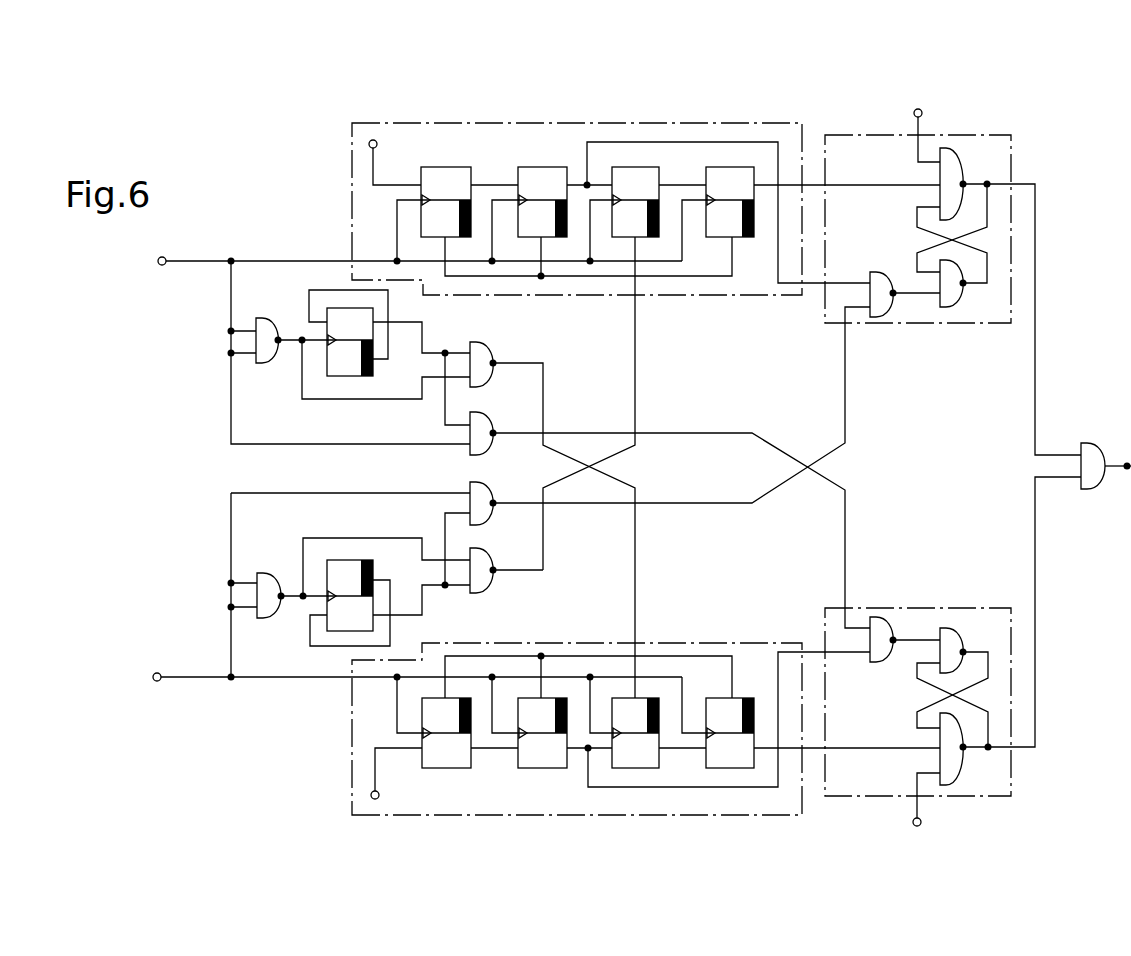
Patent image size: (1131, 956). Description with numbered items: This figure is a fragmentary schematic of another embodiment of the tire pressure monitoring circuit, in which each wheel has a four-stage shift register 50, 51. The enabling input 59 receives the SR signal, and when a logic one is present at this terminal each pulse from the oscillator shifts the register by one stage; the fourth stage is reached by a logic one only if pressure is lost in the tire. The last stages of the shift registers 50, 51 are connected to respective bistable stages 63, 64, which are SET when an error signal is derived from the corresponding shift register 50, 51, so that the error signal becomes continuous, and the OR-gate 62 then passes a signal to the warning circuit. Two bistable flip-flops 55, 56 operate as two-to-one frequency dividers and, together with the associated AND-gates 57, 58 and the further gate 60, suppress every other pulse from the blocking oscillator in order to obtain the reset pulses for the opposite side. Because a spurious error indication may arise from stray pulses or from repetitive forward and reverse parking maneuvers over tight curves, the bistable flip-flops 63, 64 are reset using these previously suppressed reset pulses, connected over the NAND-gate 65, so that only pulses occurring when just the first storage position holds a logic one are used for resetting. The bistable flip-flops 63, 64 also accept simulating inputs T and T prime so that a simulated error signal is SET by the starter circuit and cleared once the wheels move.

The four-stage shift register 50 is at (357, 143).
The four-stage shift register 51 is at (565, 644).
The bistable flip-flop 55 is at (345, 377).
The bistable flip-flop 56 is at (348, 566).
The AND-gate 57 is at (487, 428).
The AND-gate 58 is at (487, 498).
The enabling input terminal 59 is at (378, 144).
The AND gate 60 is at (487, 577).
The OR-gate 62 is at (1093, 450).
The bistable stage 63 is at (1003, 172).
The bistable stage 64 is at (960, 616).
The NAND-gate 65 is at (488, 362).